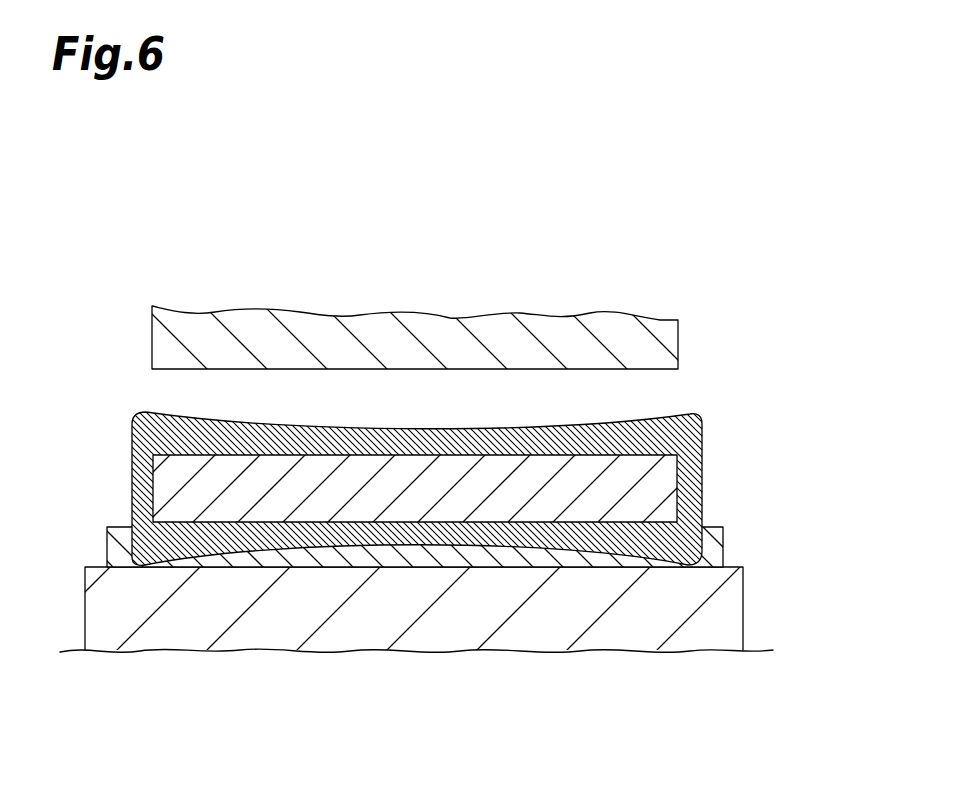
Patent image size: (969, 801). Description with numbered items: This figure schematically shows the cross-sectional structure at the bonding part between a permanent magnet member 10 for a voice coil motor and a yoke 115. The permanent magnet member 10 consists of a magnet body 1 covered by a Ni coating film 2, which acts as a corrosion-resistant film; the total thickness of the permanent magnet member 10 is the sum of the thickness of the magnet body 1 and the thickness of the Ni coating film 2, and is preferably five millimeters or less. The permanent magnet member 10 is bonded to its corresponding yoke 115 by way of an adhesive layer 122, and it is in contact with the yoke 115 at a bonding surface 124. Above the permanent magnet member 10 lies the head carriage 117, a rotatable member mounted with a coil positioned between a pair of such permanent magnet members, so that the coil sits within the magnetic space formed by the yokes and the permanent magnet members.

The magnet body 1 is at (175, 487).
The Ni coating film 2 is at (150, 437).
The permanent magnet member 10 is at (430, 489).
The yoke 115 is at (733, 607).
The head carriage 117 is at (653, 348).
The adhesive layer 122 is at (707, 553).
The bonding surface 124 is at (163, 567).